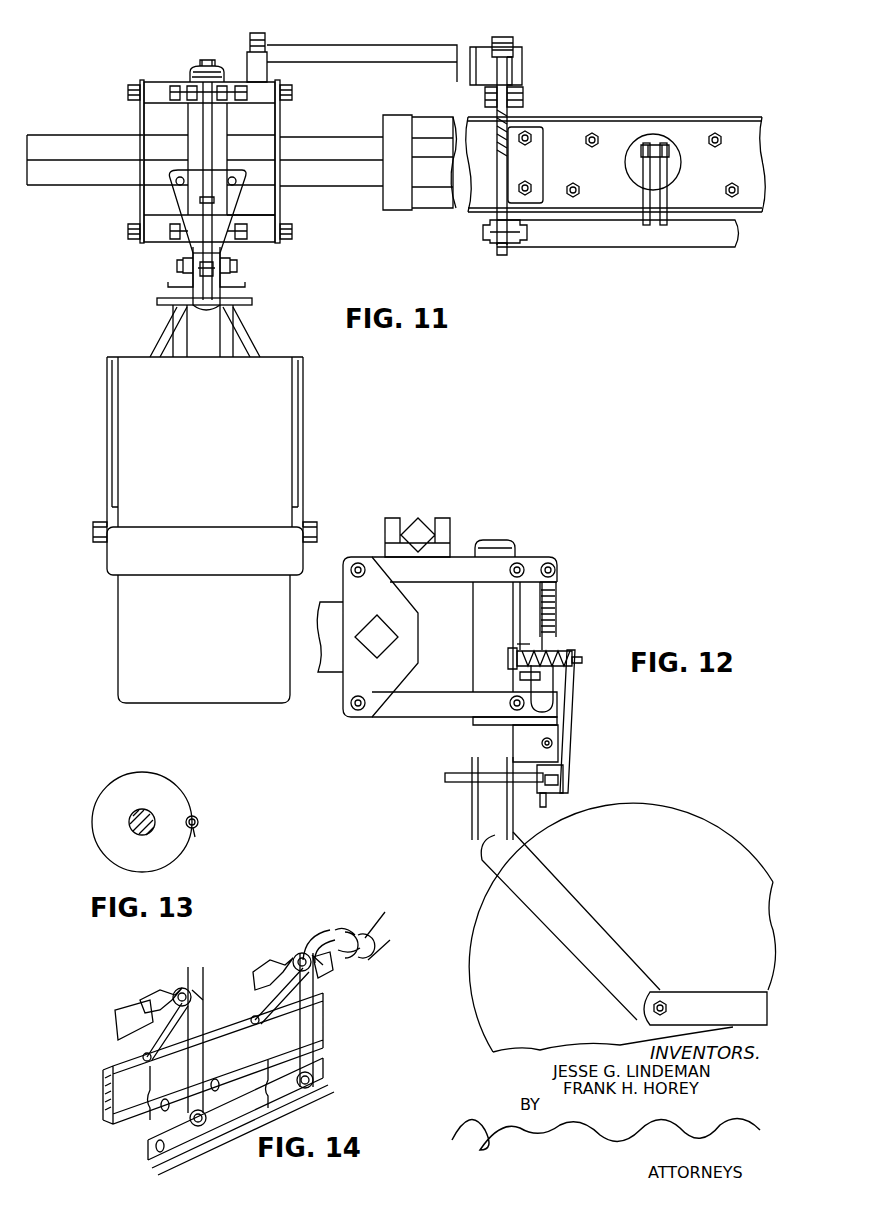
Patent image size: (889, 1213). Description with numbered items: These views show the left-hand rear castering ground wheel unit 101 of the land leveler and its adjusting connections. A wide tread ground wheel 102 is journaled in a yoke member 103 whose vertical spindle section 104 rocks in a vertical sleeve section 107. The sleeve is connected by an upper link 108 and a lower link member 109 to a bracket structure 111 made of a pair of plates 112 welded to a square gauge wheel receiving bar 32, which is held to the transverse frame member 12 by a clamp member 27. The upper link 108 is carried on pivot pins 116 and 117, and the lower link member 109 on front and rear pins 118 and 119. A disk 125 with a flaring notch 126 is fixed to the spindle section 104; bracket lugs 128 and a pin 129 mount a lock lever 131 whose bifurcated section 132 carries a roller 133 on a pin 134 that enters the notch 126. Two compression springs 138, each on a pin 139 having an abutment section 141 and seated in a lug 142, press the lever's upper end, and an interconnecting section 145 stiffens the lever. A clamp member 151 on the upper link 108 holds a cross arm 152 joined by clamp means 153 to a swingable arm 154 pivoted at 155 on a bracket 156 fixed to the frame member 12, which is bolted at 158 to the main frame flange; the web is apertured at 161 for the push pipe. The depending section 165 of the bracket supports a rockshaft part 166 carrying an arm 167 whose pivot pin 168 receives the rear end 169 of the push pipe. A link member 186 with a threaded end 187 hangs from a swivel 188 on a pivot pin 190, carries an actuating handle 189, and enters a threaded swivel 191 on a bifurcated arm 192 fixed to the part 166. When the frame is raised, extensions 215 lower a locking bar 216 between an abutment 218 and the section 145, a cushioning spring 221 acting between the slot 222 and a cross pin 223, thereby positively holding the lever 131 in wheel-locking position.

In FIG. 11, the transverse frame member 12 is at (728, 108).
In FIG. 14, the transverse frame member 12 is at (92, 1089).
In FIG. 11, the clamp member 27 is at (392, 115).
In FIG. 11, the gauge wheel receiving bar 32 is at (72, 134).
In FIG. 12, the gauge wheel receiving bar 32 is at (375, 648).
In FIG. 11, the castering ground wheel unit 101 is at (108, 326).
In FIG. 12, the castering ground wheel unit 101 is at (626, 574).
In FIG. 11, the ground wheel 102 is at (118, 646).
In FIG. 12, the ground wheel 102 is at (712, 852).
In FIG. 11, the yoke member 103 is at (279, 354).
In FIG. 12, the yoke member 103 is at (483, 893).
In FIG. 11, the spindle section 104 is at (200, 66).
In FIG. 12, the spindle section 104 is at (492, 540).
In FIG. 13, the spindle section 104 is at (142, 835).
In FIG. 11, the sleeve section 107 is at (190, 121).
In FIG. 12, the sleeve section 107 is at (478, 645).
In FIG. 11, the upper link 108 is at (166, 70).
In FIG. 12, the upper link 108 is at (465, 548).
In FIG. 11, the lower link member 109 is at (266, 215).
In FIG. 12, the lower link member 109 is at (426, 725).
In FIG. 12, the bracket structure 111 is at (349, 547).
In FIG. 11, the plate 112 is at (281, 128).
In FIG. 12, the plate 112 is at (400, 605).
In FIG. 11, the pivot pin 116 is at (128, 92).
In FIG. 12, the pivot pin 116 is at (358, 563).
In FIG. 12, the pivot pin 117 is at (518, 563).
In FIG. 11, the front pin 118 is at (128, 234).
In FIG. 12, the front pin 118 is at (355, 711).
In FIG. 11, the rear pin 119 is at (177, 266).
In FIG. 12, the rear pin 119 is at (512, 712).
In FIG. 11, the disk 125 is at (252, 301).
In FIG. 12, the disk 125 is at (455, 783).
In FIG. 13, the disk 125 is at (168, 792).
In FIG. 13, the notch 126 is at (207, 844).
In FIG. 12, the bracket lug 128 is at (540, 732).
In FIG. 11, the pin 129 is at (237, 265).
In FIG. 12, the pin 129 is at (555, 745).
In FIG. 11, the lock lever 131 is at (182, 219).
In FIG. 12, the lock lever 131 is at (571, 690).
In FIG. 12, the bifurcated section 132 is at (560, 782).
In FIG. 12, the roller 133 is at (560, 768).
In FIG. 13, the roller 133 is at (196, 816).
In FIG. 12, the pin 134 is at (545, 807).
In FIG. 13, the pin 134 is at (199, 823).
In FIG. 12, the compression spring 138 is at (552, 652).
In FIG. 11, the pin 139 is at (228, 178).
In FIG. 12, the pin 139 is at (583, 659).
In FIG. 12, the abutment section 141 is at (522, 648).
In FIG. 12, the lug 142 is at (508, 660).
In FIG. 11, the interconnecting section 145 is at (213, 262).
In FIG. 11, the clamp member 151 is at (256, 33).
In FIG. 12, the clamp member 151 is at (409, 505).
In FIG. 11, the cross arm 152 is at (370, 45).
In FIG. 12, the cross arm 152 is at (422, 530).
In FIG. 14, the cross arm 152 is at (115, 1020).
In FIG. 11, the clamp means 153 is at (502, 37).
In FIG. 14, the clamp means 153 is at (142, 1000).
In FIG. 11, the swingable arm 154 is at (536, 92).
In FIG. 14, the swingable arm 154 is at (180, 983).
In FIG. 14, the pivot 155 is at (143, 1055).
In FIG. 11, the bracket 156 is at (536, 158).
In FIG. 14, the bracket 156 is at (108, 1107).
In FIG. 11, the bolt 158 is at (592, 147).
In FIG. 11, the opening 161 is at (657, 145).
In FIG. 14, the depending section 165 is at (148, 1132).
In FIG. 11, the part 166 is at (560, 247).
In FIG. 14, the part 166 is at (238, 1125).
In FIG. 11, the arm 167 is at (634, 196).
In FIG. 11, the pivot pin 168 is at (668, 150).
In FIG. 11, the rear end 169 is at (648, 134).
In FIG. 11, the link member 186 is at (500, 190).
In FIG. 14, the link member 186 is at (226, 1045).
In FIG. 11, the threaded end 187 is at (502, 256).
In FIG. 11, the swivel 188 is at (514, 68).
In FIG. 11, the actuating handle 189 is at (497, 135).
In FIG. 14, the actuating handle 189 is at (192, 993).
In FIG. 11, the pivot pin 190 is at (523, 98).
In FIG. 14, the pivot pin 190 is at (188, 988).
In FIG. 11, the threaded swivel 191 is at (483, 240).
In FIG. 14, the bifurcated arm 192 is at (195, 1130).
In FIG. 11, the extension 215 is at (212, 60).
In FIG. 12, the extension 215 is at (544, 562).
In FIG. 11, the locking bar 216 is at (214, 125).
In FIG. 12, the locking bar 216 is at (535, 620).
In FIG. 12, the abutment 218 is at (520, 678).
In FIG. 12, the cushioning spring 221 is at (558, 592).
In FIG. 12, the slot 222 is at (556, 612).
In FIG. 12, the cross pin 223 is at (556, 568).